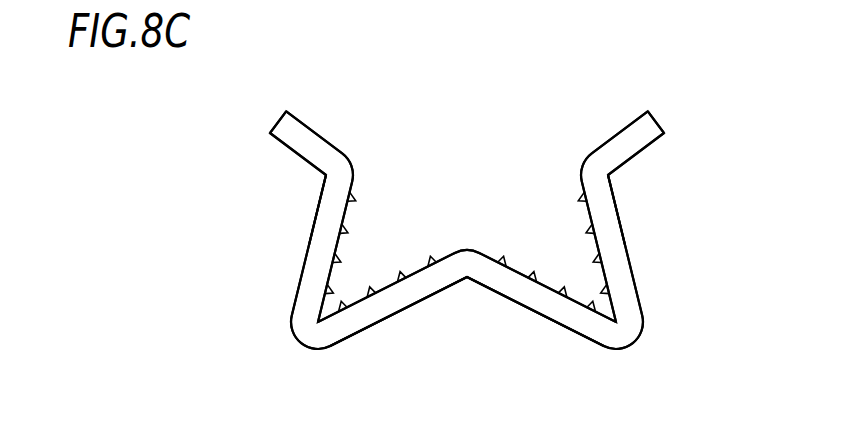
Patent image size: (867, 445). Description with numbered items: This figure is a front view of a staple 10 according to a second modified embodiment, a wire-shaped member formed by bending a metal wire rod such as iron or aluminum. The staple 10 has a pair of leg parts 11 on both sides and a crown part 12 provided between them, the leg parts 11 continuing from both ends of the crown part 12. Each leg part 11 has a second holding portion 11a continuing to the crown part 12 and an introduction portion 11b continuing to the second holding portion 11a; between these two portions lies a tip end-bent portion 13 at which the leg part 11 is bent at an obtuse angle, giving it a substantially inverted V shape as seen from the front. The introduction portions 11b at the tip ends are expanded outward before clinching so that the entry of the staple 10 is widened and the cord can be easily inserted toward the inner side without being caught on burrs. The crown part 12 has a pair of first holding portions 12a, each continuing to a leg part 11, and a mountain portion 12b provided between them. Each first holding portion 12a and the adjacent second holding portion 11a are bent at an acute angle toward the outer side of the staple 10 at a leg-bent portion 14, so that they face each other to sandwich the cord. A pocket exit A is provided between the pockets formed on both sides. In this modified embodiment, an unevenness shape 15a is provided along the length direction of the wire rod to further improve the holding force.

The staple 10 is at (672, 323).
The leg part 11 is at (632, 268).
The second holding portion 11a is at (627, 246).
The introduction portion 11b is at (632, 123).
The crown part 12 is at (405, 309).
The first holding portion 12a is at (442, 290).
The mountain portion 12b is at (462, 250).
The tip end-bent portion 13 is at (580, 166).
The leg-bent portion 14 is at (648, 387).
The unevenness shape 15a is at (531, 266).
The pocket exit A is at (472, 145).